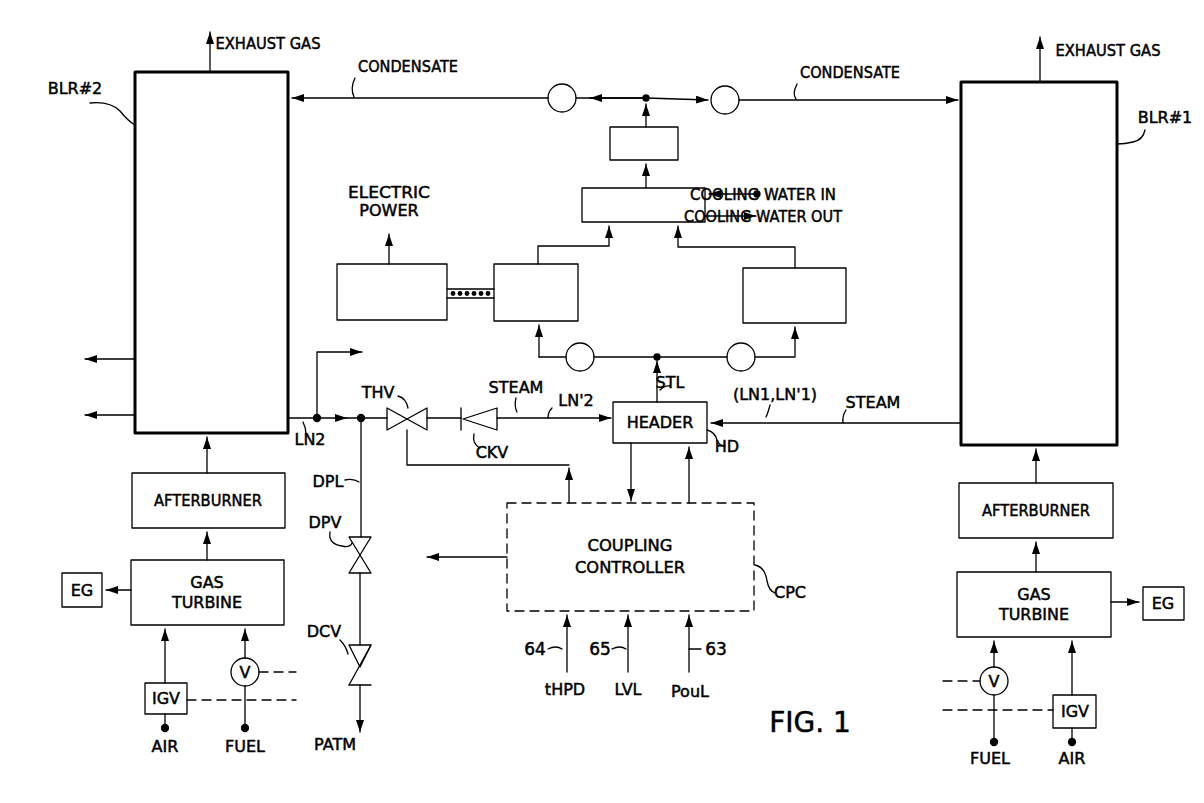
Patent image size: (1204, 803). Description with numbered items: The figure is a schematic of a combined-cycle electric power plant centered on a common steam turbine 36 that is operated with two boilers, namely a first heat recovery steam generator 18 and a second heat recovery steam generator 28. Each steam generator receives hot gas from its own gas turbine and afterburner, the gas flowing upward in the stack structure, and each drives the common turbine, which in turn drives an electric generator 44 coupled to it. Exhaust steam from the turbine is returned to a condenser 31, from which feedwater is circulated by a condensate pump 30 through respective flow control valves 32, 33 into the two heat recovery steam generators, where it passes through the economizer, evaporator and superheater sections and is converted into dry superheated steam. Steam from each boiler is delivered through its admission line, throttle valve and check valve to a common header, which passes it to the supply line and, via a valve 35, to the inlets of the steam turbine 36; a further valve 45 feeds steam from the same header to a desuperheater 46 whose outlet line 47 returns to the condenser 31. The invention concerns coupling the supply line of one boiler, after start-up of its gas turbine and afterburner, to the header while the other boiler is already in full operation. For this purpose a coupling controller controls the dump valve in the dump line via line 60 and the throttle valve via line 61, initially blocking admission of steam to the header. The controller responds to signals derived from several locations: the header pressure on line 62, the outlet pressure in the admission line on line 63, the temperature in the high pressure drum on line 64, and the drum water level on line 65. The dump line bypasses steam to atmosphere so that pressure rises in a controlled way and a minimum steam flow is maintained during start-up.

The heat recovery steam generator 18 is at (288, 140).
The heat recovery steam generator 28 is at (961, 163).
The condensate pump 30 is at (678, 144).
The condenser 31 is at (582, 196).
The flow control valve 32 is at (568, 84).
The flow control valve 33 is at (718, 86).
The valve 35 is at (588, 345).
The steam turbine 36 is at (578, 282).
The electric generator 44 is at (440, 320).
The desuperheater inlet valve 45 is at (735, 344).
The desuperheater 46 is at (846, 290).
The desuperheater outlet line 47 is at (798, 256).
The line 60 is at (452, 556).
The line 61 is at (561, 491).
The line 62 is at (631, 474).
The line 63 is at (326, 352).
The line 64 is at (107, 359).
The line 65 is at (107, 415).